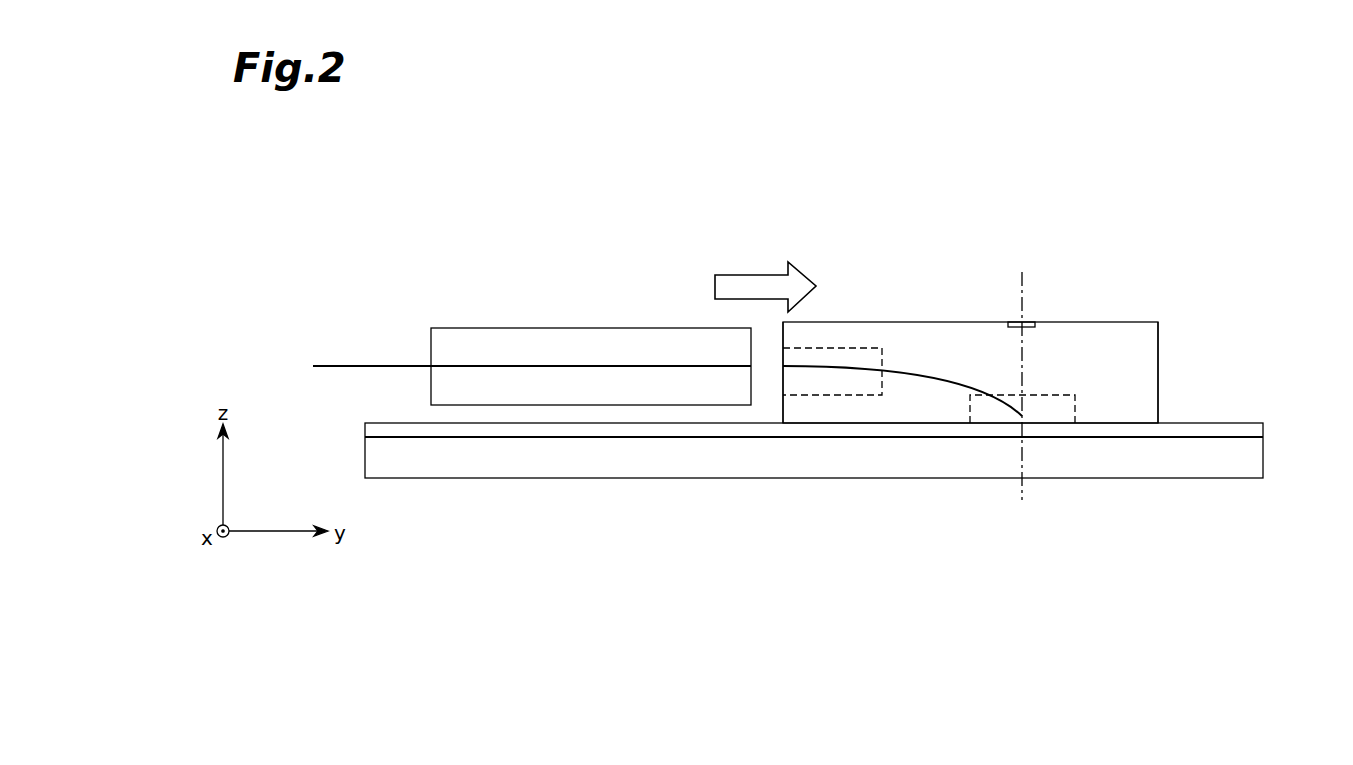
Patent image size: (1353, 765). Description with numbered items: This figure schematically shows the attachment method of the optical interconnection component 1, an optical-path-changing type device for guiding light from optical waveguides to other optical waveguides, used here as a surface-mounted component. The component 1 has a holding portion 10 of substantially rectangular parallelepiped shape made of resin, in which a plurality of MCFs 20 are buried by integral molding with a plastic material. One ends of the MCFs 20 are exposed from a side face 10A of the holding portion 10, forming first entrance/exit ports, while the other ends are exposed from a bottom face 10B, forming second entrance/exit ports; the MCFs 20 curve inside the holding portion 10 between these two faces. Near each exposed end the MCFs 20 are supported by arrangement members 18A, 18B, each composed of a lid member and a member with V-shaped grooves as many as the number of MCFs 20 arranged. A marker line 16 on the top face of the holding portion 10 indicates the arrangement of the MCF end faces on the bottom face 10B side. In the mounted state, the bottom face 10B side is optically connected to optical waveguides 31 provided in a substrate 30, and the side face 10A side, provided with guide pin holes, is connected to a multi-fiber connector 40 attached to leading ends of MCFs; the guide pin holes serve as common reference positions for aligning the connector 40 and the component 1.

The optical interconnection component 1 is at (1003, 330).
The holding portion 10 is at (1143, 352).
The side face 10A is at (783, 408).
The bottom face 10B is at (1111, 423).
The marker line 16 is at (1033, 322).
The arrangement member 18A is at (855, 348).
The arrangement member 18B is at (970, 400).
The MCF 20 is at (935, 372).
The substrate 30 is at (1243, 420).
The optical waveguide 31 is at (1229, 437).
The multi-fiber connector 40 is at (551, 328).